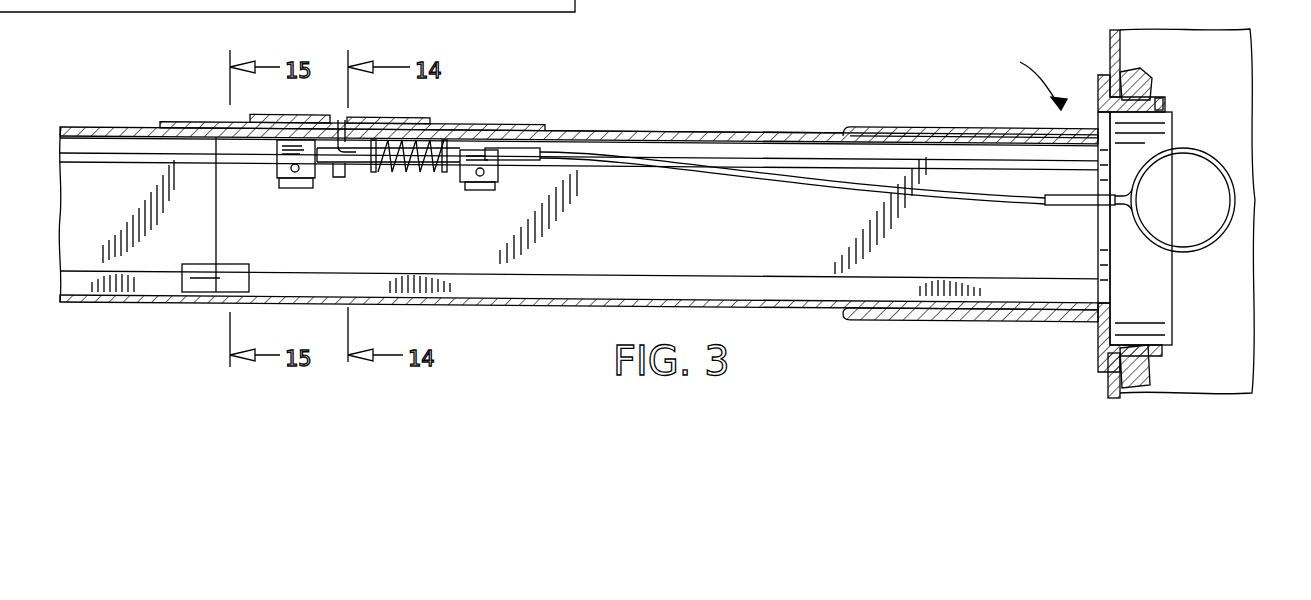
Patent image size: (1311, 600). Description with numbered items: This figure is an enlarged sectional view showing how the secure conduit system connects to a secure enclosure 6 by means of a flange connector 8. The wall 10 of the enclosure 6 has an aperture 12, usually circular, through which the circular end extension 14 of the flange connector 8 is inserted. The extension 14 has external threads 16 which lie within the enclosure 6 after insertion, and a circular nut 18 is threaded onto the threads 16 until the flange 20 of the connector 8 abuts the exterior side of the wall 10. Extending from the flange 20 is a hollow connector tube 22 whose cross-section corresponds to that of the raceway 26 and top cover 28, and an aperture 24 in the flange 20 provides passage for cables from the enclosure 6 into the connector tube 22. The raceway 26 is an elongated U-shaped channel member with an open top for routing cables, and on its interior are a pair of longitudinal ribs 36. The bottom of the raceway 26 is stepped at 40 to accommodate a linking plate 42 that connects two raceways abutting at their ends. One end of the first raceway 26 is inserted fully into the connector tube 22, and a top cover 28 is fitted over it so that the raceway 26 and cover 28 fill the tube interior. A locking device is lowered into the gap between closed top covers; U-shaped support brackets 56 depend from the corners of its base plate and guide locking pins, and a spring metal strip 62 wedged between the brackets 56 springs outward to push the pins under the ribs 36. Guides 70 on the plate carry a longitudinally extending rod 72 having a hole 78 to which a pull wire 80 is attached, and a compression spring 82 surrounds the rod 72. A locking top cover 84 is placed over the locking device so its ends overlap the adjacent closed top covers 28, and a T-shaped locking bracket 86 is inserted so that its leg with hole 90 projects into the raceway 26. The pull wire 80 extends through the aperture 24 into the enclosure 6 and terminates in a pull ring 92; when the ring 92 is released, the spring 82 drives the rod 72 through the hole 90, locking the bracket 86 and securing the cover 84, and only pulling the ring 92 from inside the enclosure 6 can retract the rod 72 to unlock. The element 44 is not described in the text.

The secure enclosure 6 is at (1218, 318).
The flange connector 8 is at (1035, 74).
The wall 10 is at (1110, 32).
The aperture 12 is at (1108, 358).
The circular end extension 14 is at (1172, 113).
The external threads 16 is at (1160, 98).
The circular nut 18 is at (1142, 72).
The flange 20 is at (1100, 327).
The connector tube 22 is at (945, 127).
The aperture 24 is at (1105, 265).
The raceway 26 is at (140, 302).
The top cover 28 is at (694, 112).
The longitudinal ribs 36 is at (975, 165).
The stepped bottom 40 is at (313, 272).
The linking plate 42 is at (195, 263).
The sleeve end 44 is at (843, 128).
The U-shaped support brackets 56 is at (295, 188).
The spring metal strip 62 is at (283, 163).
The guides 70 is at (373, 170).
The rod 72 is at (367, 162).
The hole 78 is at (455, 180).
The pull wire 80 is at (792, 188).
The compression spring 82 is at (422, 174).
The locking top cover 84 is at (505, 128).
The T-shaped locking bracket 86 is at (270, 118).
The hole 90 is at (338, 152).
The pull ring 92 is at (1215, 232).